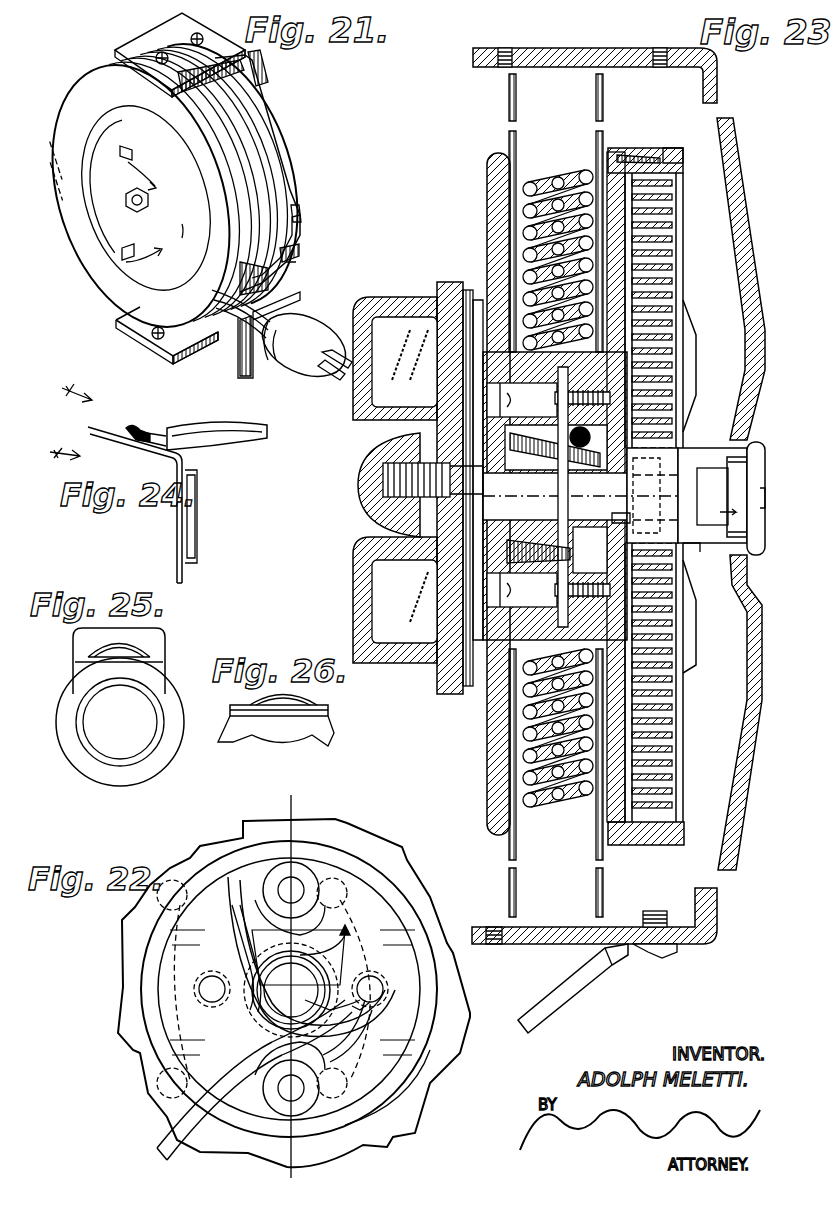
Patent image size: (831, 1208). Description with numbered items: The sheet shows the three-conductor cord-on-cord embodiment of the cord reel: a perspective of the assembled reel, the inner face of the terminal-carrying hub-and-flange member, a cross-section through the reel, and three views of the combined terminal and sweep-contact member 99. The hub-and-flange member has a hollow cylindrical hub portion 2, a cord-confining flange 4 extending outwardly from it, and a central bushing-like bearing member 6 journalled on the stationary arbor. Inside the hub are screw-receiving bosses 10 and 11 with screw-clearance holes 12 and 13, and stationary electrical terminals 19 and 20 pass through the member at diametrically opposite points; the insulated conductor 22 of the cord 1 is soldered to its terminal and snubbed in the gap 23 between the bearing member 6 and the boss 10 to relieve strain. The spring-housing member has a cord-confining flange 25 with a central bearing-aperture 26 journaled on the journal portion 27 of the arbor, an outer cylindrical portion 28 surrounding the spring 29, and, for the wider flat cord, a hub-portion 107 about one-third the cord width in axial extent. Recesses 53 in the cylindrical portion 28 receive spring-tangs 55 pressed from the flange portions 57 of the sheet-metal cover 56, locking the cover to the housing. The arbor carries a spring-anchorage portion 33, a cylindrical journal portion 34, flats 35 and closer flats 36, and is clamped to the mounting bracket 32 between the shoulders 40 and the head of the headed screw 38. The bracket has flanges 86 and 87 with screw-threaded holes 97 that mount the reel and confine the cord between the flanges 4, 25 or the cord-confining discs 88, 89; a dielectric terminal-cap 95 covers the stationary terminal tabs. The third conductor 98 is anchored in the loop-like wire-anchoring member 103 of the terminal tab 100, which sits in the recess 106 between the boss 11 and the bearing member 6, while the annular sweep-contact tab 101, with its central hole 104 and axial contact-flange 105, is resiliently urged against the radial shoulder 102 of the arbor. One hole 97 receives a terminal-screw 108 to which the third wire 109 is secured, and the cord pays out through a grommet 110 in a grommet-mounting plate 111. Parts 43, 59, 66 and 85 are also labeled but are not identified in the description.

In FIG. 21, the cord 1 is at (272, 302).
In FIG. 22, the cord 1 is at (150, 1140).
In FIG. 23, the cord 1 is at (548, 182).
In FIG. 22, the hub portion 2 is at (142, 1008).
In FIG. 22, the cord-confining flange 4 is at (84, 962).
In FIG. 23, the cord-confining flange 4 is at (486, 200).
In FIG. 22, the bushing-like bearing member 6 is at (330, 960).
In FIG. 23, the bushing-like bearing member 6 is at (554, 535).
In FIG. 22, the screw-receiving boss 10 is at (320, 1100).
In FIG. 22, the screw-receiving boss 11 is at (300, 888).
In FIG. 22, the screw-clearance hole 12 is at (285, 1100).
In FIG. 22, the screw-clearance hole 13 is at (305, 876).
In FIG. 22, the stationary electrical terminal 19 is at (198, 990).
In FIG. 22, the stationary electrical terminal 20 is at (384, 990).
In FIG. 22, the insulated conductor 22 is at (372, 1020).
In FIG. 26, the gap 23 is at (277, 785).
In FIG. 22, the gap 23 is at (322, 805).
In FIG. 21, the cord-confining flange 25 is at (250, 150).
In FIG. 23, the cord-confining flange 25 is at (648, 548).
In FIG. 21, the central bearing-aperture 26 is at (60, 417).
In FIG. 23, the journal portion 27 is at (630, 478).
In FIG. 21, the outer cylindrical portion 28 is at (268, 160).
In FIG. 23, the outer cylindrical portion 28 is at (650, 846).
In FIG. 23, the spring 29 is at (672, 730).
In FIG. 21, the mounting bracket 32 is at (245, 80).
In FIG. 23, the mounting bracket 32 is at (718, 90).
In FIG. 23, the spring-anchorage portion 33 is at (672, 543).
In FIG. 23, the cylindrical journal portion 34 is at (690, 460).
In FIG. 23, the pair of flats 35 is at (718, 500).
In FIG. 23, the pair of flats 36 is at (735, 486).
In FIG. 23, the headed screw 38 is at (762, 538).
In FIG. 23, the shoulders 40 is at (750, 515).
In FIG. 21, the mounting plate 43 is at (105, 225).
In FIG. 23, the mounting plate 43 is at (446, 290).
In FIG. 23, the recesses 53 is at (614, 150).
In FIG. 21, the spring-tangs 55 is at (300, 212).
In FIG. 23, the spring-tangs 55 is at (666, 150).
In FIG. 21, the sheet-metal cover 56 is at (290, 150).
In FIG. 23, the sheet-metal cover 56 is at (683, 240).
In FIG. 21, the flange portions 57 is at (305, 238).
In FIG. 23, the flange portions 57 is at (630, 150).
In FIG. 23, the bulge 59 is at (690, 448).
In FIG. 23, the spring 66 is at (710, 487).
In FIG. 23, the bolt head 85 is at (372, 500).
In FIG. 21, the flange 86 is at (128, 48).
In FIG. 23, the flange 86 is at (592, 47).
In FIG. 21, the flange 87 is at (180, 355).
In FIG. 23, the cord-confining disc 88 is at (510, 112).
In FIG. 23, the cord-confining disc 89 is at (600, 112).
In FIG. 23, the terminal-cap 95 is at (346, 410).
In FIG. 21, the screw-threaded holes 97 is at (190, 39).
In FIG. 23, the screw-threaded holes 97 is at (505, 46).
In FIG. 24, the third conductor 98 is at (244, 426).
In FIG. 22, the third conductor 98 is at (232, 942).
In FIG. 24, the combined terminal and sweep-contact member 99 is at (156, 536).
In FIG. 25, the combined terminal and sweep-contact member 99 is at (63, 660).
In FIG. 24, the terminal tab 100 is at (104, 430).
In FIG. 25, the terminal tab 100 is at (162, 650).
In FIG. 26, the terminal tab 100 is at (328, 712).
In FIG. 22, the terminal tab 100 is at (340, 935).
In FIG. 23, the terminal tab 100 is at (560, 455).
In FIG. 24, the sweep-contact tab 101 is at (196, 580).
In FIG. 25, the sweep-contact tab 101 is at (90, 782).
In FIG. 26, the sweep-contact tab 101 is at (332, 736).
In FIG. 22, the sweep-contact tab 101 is at (345, 948).
In FIG. 23, the sweep-contact tab 101 is at (590, 525).
In FIG. 23, the annular radial shoulder 102 is at (598, 491).
In FIG. 24, the wire-anchoring member 103 is at (145, 435).
In FIG. 25, the wire-anchoring member 103 is at (128, 632).
In FIG. 26, the wire-anchoring member 103 is at (300, 700).
In FIG. 24, the central hole 104 is at (205, 540).
In FIG. 25, the central hole 104 is at (128, 712).
In FIG. 26, the central hole 104 is at (290, 744).
In FIG. 24, the contact-flange 105 is at (210, 505).
In FIG. 25, the contact-flange 105 is at (160, 712).
In FIG. 23, the contact-flange 105 is at (592, 522).
In FIG. 22, the recess 106 is at (330, 920).
In FIG. 23, the recess 106 is at (518, 445).
In FIG. 23, the hub-portion 107 is at (612, 354).
In FIG. 23, the terminal-screw 108 is at (665, 958).
In FIG. 23, the third wire 109 is at (584, 1004).
In FIG. 21, the cord-pay-out grommet 110 is at (262, 362).
In FIG. 21, the grommet-mounting plate 111 is at (322, 300).